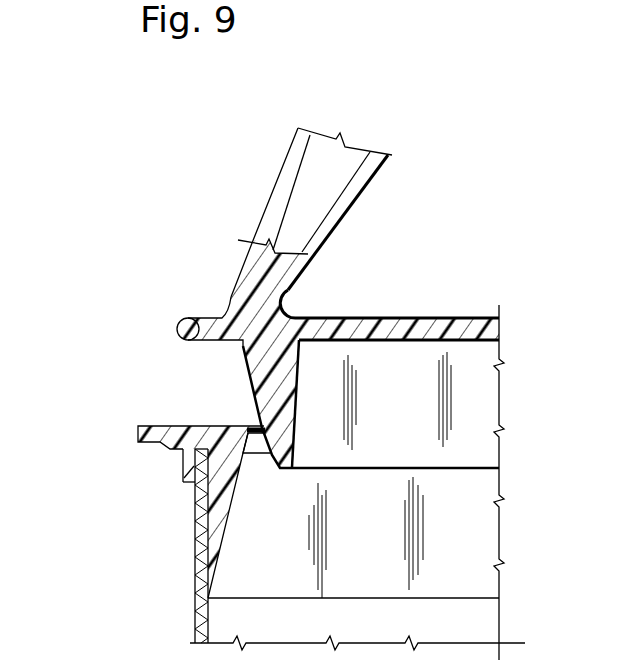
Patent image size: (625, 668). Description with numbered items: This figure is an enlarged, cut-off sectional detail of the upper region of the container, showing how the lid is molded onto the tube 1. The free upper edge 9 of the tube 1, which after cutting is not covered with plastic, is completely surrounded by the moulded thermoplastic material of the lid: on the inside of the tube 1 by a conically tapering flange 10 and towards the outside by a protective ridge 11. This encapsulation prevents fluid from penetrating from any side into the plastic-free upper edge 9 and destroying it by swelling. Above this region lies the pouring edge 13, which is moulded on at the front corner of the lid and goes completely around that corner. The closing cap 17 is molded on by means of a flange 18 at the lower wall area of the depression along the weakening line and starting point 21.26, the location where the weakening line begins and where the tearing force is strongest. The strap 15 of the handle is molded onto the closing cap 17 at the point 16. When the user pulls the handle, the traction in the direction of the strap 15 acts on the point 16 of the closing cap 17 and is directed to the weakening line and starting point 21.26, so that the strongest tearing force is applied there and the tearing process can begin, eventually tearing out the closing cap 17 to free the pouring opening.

The tube 1 is at (200, 615).
The upper edge 9 is at (182, 484).
The conically tapering flange 10 is at (222, 538).
The protective ridge 11 is at (188, 463).
The pouring edge 13 is at (138, 426).
The strap 15 is at (297, 175).
The point 16 is at (193, 328).
The closing cap 17 is at (473, 333).
The flange 18 is at (290, 387).
The weakening line and point 21.26 is at (252, 410).